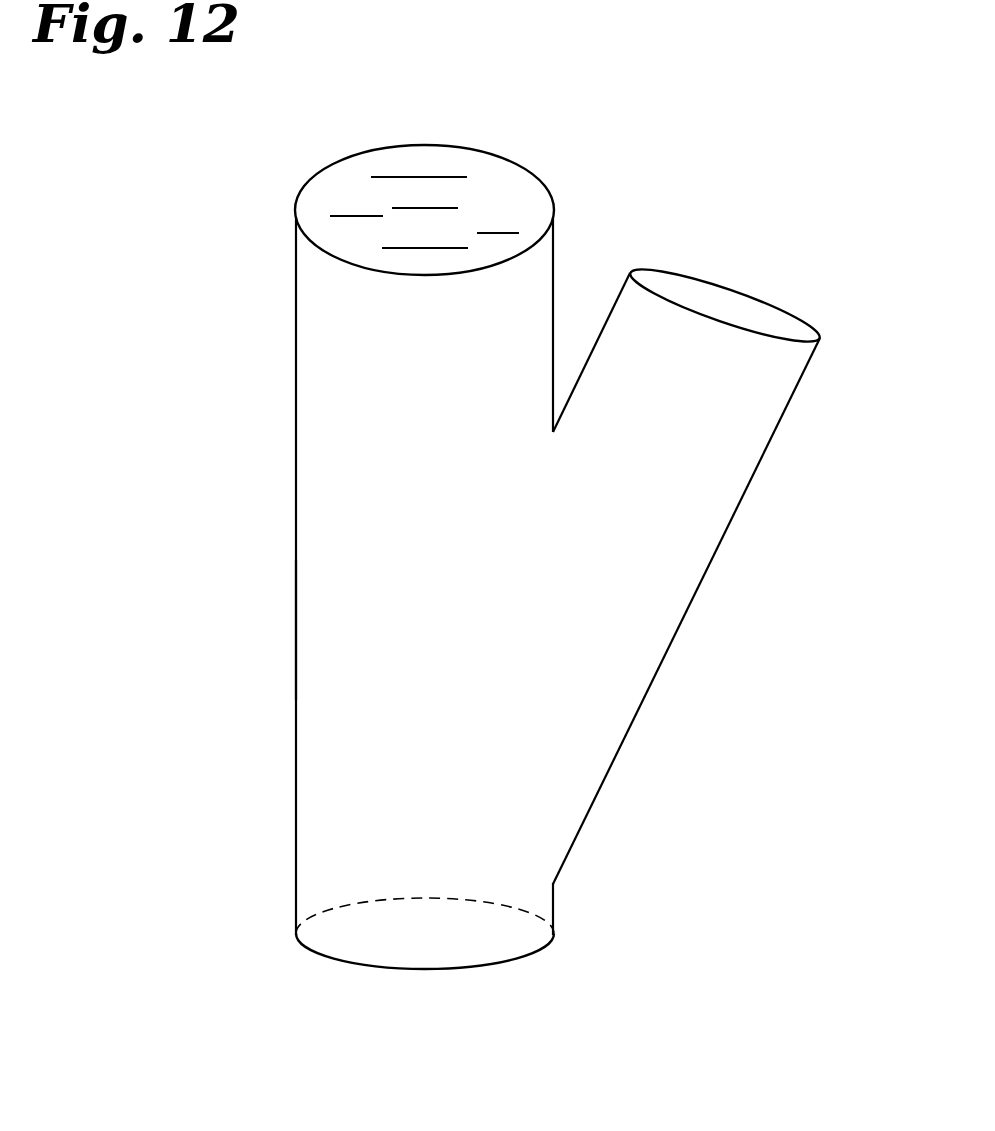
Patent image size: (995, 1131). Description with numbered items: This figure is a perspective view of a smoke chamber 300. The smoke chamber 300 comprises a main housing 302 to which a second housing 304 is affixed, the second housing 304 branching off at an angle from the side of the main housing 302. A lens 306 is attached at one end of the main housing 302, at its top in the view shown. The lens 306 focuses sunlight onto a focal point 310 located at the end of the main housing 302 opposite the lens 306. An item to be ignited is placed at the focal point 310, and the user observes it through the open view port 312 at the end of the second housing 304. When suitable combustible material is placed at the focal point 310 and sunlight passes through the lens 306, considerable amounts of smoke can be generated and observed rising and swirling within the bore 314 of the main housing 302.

The smoke chamber 300 is at (246, 560).
The main housing 302 is at (296, 438).
The second housing 304 is at (773, 433).
The lens 306 is at (404, 177).
The focal point 310 is at (403, 936).
The open view port 312 is at (723, 298).
The bore 314 is at (367, 739).